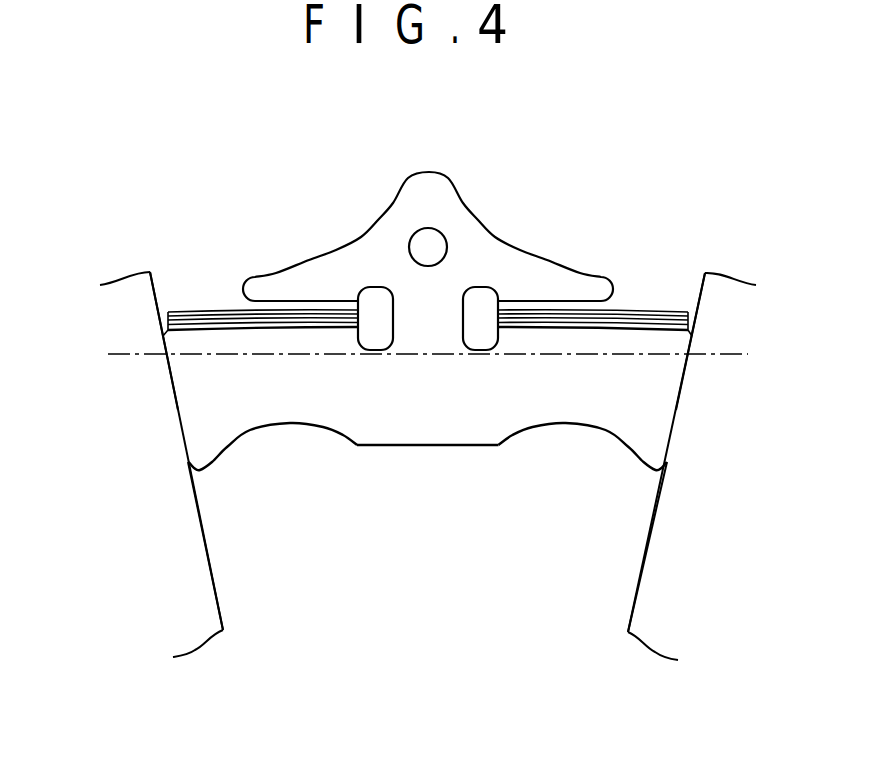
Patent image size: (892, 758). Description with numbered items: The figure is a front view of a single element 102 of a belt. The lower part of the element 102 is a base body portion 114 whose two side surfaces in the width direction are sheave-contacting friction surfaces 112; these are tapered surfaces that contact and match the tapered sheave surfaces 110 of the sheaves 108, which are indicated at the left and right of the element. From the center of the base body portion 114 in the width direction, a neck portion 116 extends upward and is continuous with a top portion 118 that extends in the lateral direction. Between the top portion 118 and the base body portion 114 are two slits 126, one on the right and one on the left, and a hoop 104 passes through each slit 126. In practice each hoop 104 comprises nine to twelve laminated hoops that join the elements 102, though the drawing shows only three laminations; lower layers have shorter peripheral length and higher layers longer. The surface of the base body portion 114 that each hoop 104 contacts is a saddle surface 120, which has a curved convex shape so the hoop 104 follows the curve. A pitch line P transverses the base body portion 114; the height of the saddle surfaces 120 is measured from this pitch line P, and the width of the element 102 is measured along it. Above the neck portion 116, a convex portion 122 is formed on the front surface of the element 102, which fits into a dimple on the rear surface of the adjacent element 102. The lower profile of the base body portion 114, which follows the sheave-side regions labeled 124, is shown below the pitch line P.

The element 102 is at (448, 171).
The hoop 104 is at (197, 310).
The sheave 108 is at (198, 608).
The tapered sheave surface 110 is at (200, 515).
The sheave-contacting friction surface 112 is at (179, 403).
The base body portion 114 is at (435, 425).
The neck portion 116 is at (440, 312).
The top portion 118 is at (338, 248).
The saddle surface 120 is at (236, 334).
The convex portion 122 is at (420, 228).
The curved portion 124 is at (348, 442).
The slit 126 is at (327, 303).
The pitch line P is at (720, 357).